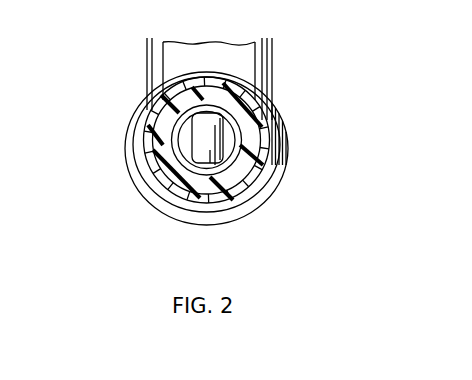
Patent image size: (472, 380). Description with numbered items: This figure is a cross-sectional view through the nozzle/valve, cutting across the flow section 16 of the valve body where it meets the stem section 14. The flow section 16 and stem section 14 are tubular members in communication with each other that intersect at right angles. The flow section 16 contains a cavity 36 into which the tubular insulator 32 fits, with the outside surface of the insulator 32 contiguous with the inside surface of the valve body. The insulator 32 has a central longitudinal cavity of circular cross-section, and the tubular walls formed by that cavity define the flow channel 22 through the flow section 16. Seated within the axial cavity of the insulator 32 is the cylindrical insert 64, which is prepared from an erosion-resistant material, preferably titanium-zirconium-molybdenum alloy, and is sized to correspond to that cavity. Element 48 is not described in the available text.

The stem section 14 is at (276, 67).
The flow section 16 is at (249, 205).
The flow channel 22 is at (192, 133).
The tubular insulator 32 is at (170, 152).
The cavity 36 is at (160, 104).
The shaft bore 48 is at (215, 133).
The cylindrical insert 64 is at (253, 156).